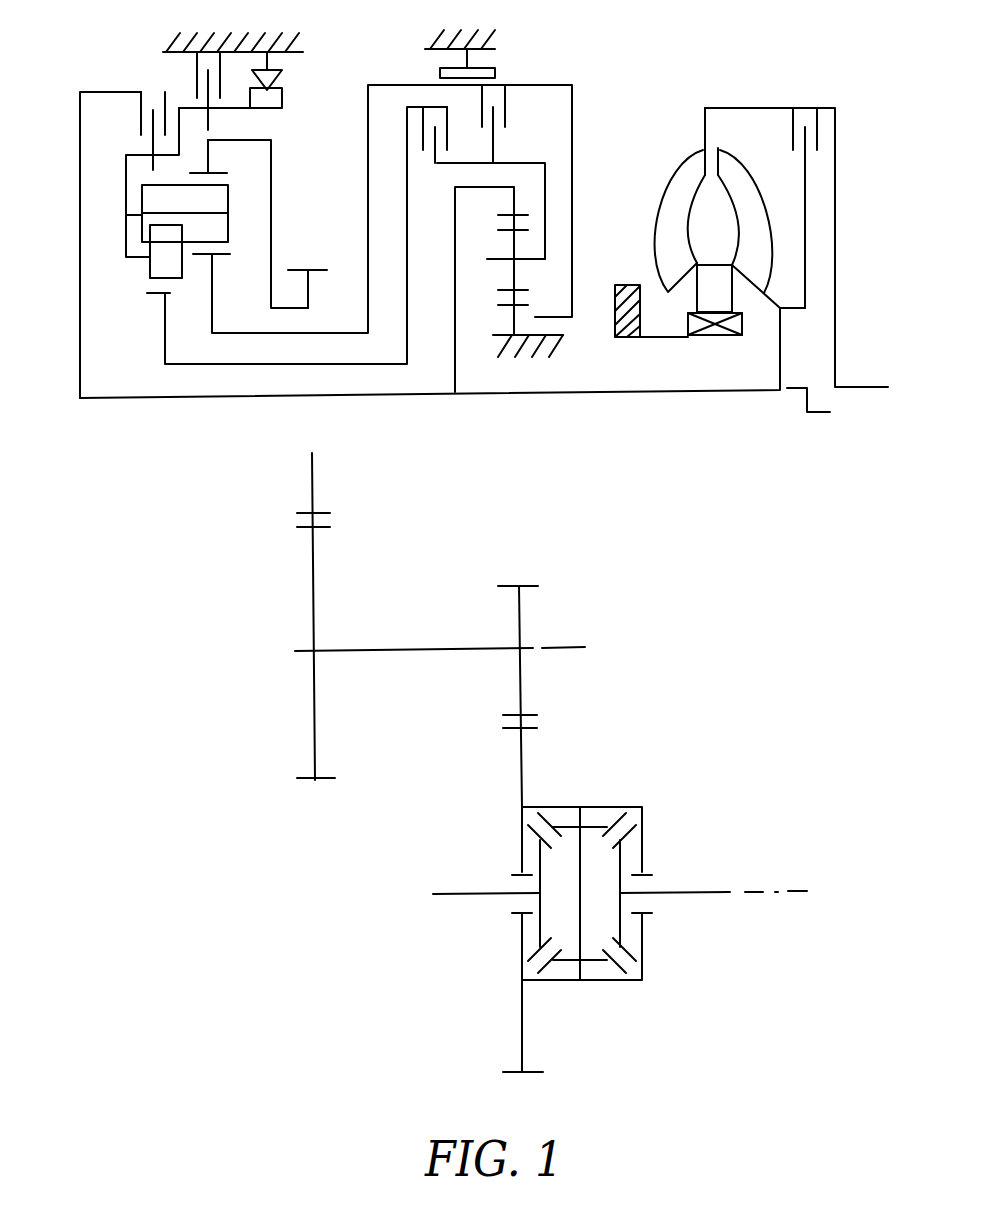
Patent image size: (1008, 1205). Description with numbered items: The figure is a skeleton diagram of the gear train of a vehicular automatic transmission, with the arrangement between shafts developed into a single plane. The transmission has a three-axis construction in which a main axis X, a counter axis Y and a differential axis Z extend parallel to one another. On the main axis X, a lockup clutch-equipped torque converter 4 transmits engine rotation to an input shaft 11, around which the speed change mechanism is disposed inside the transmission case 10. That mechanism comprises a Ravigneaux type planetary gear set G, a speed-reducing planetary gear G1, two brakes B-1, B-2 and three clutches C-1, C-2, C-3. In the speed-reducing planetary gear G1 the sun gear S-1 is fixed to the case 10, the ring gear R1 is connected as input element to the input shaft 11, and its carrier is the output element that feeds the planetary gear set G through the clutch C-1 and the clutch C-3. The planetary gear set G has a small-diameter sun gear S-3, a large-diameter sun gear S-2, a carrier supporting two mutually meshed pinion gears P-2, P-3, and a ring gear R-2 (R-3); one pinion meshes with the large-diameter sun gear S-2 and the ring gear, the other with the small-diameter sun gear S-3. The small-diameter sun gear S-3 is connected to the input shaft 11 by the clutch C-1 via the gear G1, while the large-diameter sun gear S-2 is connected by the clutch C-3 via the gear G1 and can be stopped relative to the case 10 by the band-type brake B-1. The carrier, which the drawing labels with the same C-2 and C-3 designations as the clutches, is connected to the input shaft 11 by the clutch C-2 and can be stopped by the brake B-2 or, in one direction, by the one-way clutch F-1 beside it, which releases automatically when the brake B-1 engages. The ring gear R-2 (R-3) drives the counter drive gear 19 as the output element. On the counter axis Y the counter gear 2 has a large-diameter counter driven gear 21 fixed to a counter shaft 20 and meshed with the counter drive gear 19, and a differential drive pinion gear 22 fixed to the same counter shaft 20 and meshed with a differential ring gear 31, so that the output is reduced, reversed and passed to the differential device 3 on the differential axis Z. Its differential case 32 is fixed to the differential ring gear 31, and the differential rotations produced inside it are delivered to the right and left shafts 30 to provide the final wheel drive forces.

The transmission case 10 is at (170, 43).
The input shaft 11 is at (577, 392).
The lockup clutch-equipped torque converter 4 is at (705, 135).
The main axis X is at (817, 407).
The brake B-2 is at (220, 68).
The one-way clutch F-1 is at (265, 57).
The clutch C-2 is at (135, 213).
The ring gear R-2 is at (217, 170).
The ring gear R-3 is at (305, 165).
The counter drive gear 19 is at (315, 270).
The pinion gear P-2 is at (228, 225).
The small-diameter sun gear S-3 is at (162, 294).
The clutch C-3 is at (138, 258).
The planetary gear set G is at (132, 285).
The pinion gear P-3 is at (182, 267).
The large-diameter sun gear S-2 is at (222, 254).
The brake B-1 is at (467, 41).
The clutch C-1 is at (552, 278).
The ring gear R1 is at (510, 213).
The sun gear S-1 is at (503, 317).
The speed-reducing planetary gear G1 is at (487, 328).
The counter gear 2 is at (472, 547).
The counter driven gear 21 is at (313, 568).
The counter shaft 20 is at (435, 650).
The counter axis Y is at (574, 650).
The differential drive pinion gear 22 is at (519, 617).
The differential ring gear 31 is at (522, 755).
The differential device 3 is at (628, 914).
The right and left shafts 30 is at (470, 895).
The differential case 32 is at (620, 982).
The differential axis Z is at (784, 893).